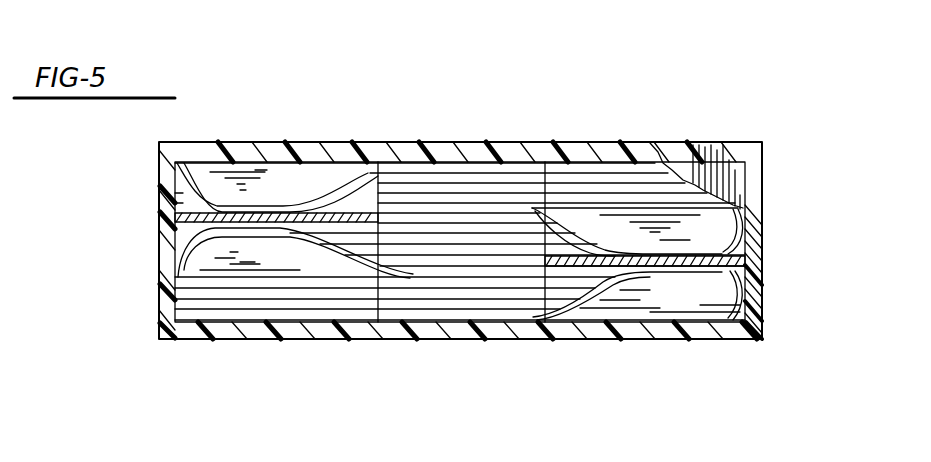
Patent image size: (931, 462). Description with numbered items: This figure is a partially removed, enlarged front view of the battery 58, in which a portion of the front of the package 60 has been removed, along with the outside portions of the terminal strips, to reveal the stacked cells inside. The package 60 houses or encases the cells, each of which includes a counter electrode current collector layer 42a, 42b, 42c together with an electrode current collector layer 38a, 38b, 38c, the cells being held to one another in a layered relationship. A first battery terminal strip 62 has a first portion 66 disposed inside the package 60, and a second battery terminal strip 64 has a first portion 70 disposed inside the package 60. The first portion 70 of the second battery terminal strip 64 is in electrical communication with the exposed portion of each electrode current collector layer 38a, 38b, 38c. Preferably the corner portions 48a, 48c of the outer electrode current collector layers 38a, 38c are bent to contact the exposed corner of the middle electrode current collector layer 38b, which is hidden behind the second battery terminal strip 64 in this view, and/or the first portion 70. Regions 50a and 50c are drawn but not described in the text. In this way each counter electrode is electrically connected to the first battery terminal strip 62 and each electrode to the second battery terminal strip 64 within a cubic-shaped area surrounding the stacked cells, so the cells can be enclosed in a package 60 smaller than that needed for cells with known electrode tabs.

The battery 58 is at (776, 110).
The package 60 is at (332, 142).
The first battery terminal strip 62 is at (187, 218).
The second battery terminal strip 64 is at (765, 260).
The first portion of first battery terminal strip 66 is at (187, 237).
The first portion of second battery terminal strip 70 is at (748, 303).
The counter electrode current collector layer 42a is at (455, 168).
The counter electrode current collector layer 42b is at (505, 218).
The counter electrode current collector layer 42c is at (417, 272).
The electrode current collector layer 38a is at (533, 208).
The electrode current collector layer 38b is at (515, 263).
The electrode current collector layer 38c is at (537, 317).
The upper left inlet chamber 50a is at (253, 182).
The lower left inlet chamber 50c is at (207, 255).
The corner portion 48a is at (717, 232).
The corner portion 48c is at (710, 303).